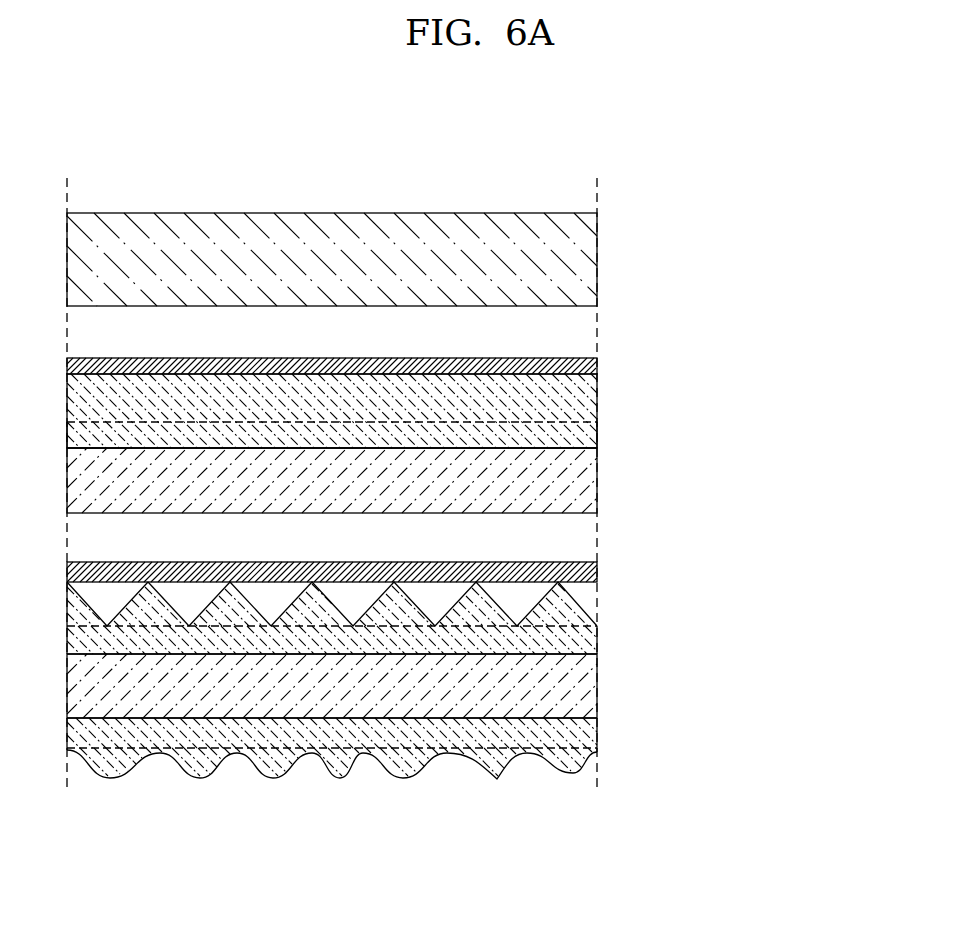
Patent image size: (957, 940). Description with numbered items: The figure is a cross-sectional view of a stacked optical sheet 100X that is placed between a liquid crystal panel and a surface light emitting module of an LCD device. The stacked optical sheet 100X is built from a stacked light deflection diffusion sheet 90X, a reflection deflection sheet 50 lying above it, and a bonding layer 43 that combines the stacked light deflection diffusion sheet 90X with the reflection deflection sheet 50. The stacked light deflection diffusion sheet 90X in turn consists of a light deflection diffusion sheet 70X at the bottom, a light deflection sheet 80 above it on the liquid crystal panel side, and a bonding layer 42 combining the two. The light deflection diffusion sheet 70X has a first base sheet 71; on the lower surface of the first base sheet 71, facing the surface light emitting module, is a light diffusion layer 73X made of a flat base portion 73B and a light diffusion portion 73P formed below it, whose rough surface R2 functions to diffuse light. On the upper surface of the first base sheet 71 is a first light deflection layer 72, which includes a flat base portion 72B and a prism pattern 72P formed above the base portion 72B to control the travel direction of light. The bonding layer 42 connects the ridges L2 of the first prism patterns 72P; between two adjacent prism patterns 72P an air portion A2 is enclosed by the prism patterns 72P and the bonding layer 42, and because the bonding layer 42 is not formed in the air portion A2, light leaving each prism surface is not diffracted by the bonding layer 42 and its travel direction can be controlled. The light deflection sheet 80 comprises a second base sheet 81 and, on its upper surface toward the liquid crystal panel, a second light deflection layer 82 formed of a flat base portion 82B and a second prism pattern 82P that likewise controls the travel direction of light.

The stacked optical sheet 100X is at (494, 162).
The reflection deflection sheet 50 is at (597, 263).
The bonding layer 43 is at (597, 369).
The second prism pattern 82P is at (597, 401).
The flat base portion 82B is at (597, 438).
The second light deflection layer 82 is at (397, 411).
The light deflection sheet 80 is at (426, 443).
The second base sheet 81 is at (597, 481).
The stacked light deflection diffusion sheet 90X is at (470, 598).
The bonding layer 42 is at (597, 574).
The first prism pattern 72P is at (368, 574).
The flat base portion 72B is at (597, 641).
The first light deflection layer 72 is at (397, 588).
The first base sheet 71 is at (597, 686).
The light deflection diffusion sheet 70X is at (436, 681).
The flat base portion 73B is at (597, 734).
The light diffusion layer 73X is at (403, 779).
The light diffusion portion 73P is at (368, 794).
The air portion A2 is at (190, 597).
The ridges L2 is at (230, 582).
The rough surface R2 is at (497, 779).